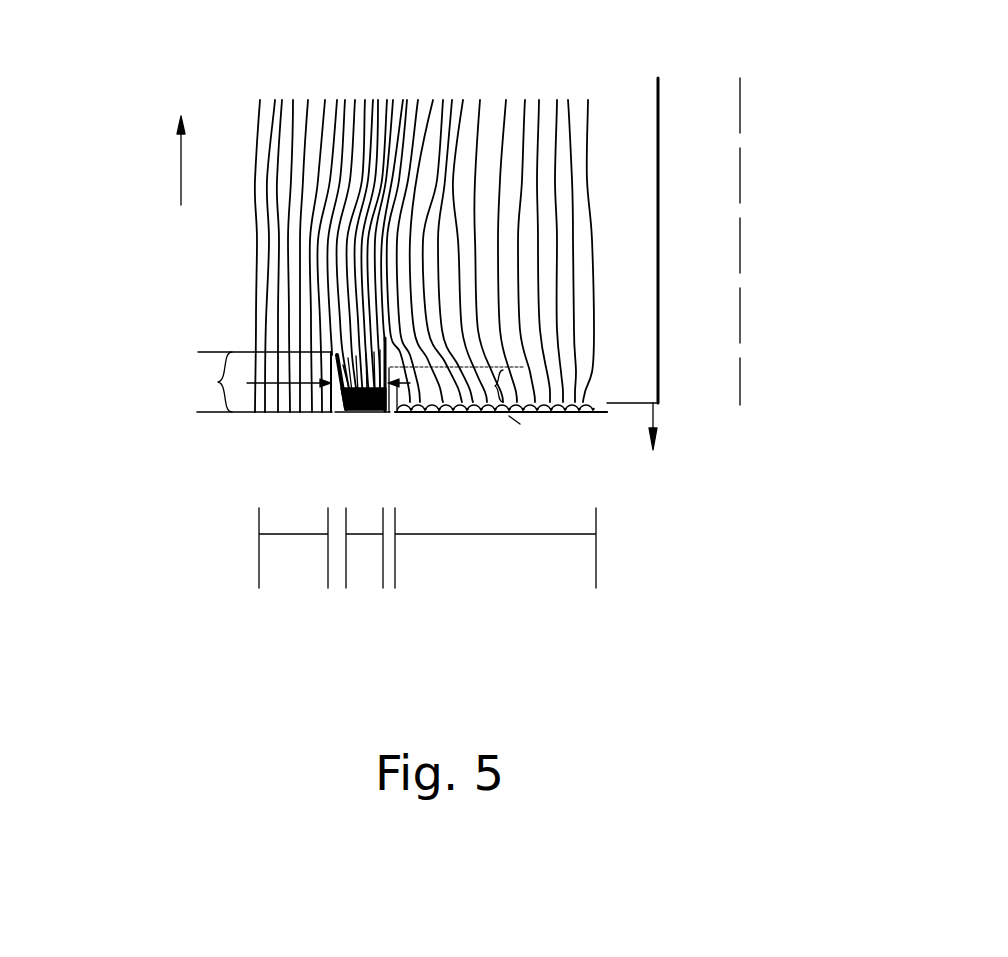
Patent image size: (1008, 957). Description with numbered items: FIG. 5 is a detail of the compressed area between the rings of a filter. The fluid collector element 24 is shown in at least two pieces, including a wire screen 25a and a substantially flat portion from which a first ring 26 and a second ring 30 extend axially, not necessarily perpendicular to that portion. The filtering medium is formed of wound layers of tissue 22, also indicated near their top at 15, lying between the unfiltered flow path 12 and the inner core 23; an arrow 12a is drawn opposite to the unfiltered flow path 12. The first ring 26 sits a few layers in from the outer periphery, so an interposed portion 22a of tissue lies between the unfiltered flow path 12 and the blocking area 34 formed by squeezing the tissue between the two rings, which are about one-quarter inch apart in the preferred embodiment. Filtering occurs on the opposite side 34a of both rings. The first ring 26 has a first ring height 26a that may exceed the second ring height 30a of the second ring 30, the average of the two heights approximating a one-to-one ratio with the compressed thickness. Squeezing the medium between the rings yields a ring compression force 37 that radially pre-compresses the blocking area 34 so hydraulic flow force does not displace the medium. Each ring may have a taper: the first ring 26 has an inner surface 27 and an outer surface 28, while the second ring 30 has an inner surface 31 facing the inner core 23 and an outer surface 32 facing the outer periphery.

The fibers of fibrous web 15 is at (258, 125).
The wound layers of tissue 22 is at (372, 140).
The unfiltered flow path 12 is at (158, 160).
The inner core 23 is at (690, 195).
The outer surface 32 is at (378, 342).
The inner surface 27 is at (358, 352).
The first ring height 26a is at (246, 382).
The ring compression force 37 is at (197, 412).
The outer surface 28 is at (328, 386).
The first ring 26 is at (327, 413).
The second ring 30 is at (421, 413).
The inner surface 31 is at (425, 413).
The second ring height 30a is at (475, 388).
The fluid collector element 24 is at (503, 413).
The direction of motion 12a is at (684, 426).
The wire screen 25a is at (600, 413).
The interposed portion 22a is at (293, 548).
The blocking area 34 is at (366, 548).
The opposite side 34a is at (495, 548).